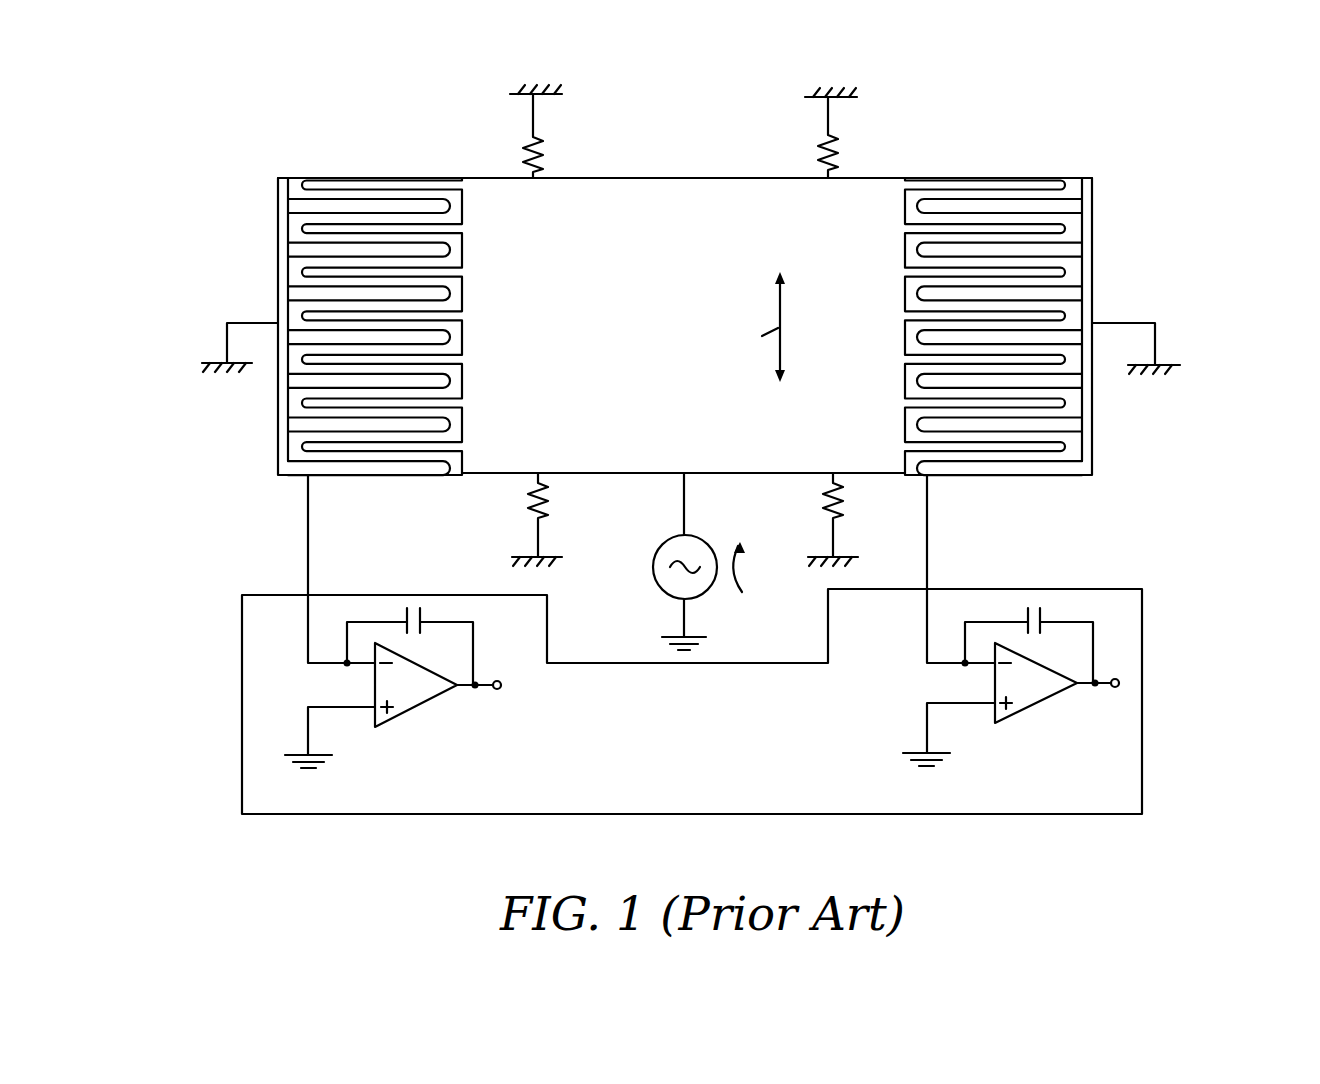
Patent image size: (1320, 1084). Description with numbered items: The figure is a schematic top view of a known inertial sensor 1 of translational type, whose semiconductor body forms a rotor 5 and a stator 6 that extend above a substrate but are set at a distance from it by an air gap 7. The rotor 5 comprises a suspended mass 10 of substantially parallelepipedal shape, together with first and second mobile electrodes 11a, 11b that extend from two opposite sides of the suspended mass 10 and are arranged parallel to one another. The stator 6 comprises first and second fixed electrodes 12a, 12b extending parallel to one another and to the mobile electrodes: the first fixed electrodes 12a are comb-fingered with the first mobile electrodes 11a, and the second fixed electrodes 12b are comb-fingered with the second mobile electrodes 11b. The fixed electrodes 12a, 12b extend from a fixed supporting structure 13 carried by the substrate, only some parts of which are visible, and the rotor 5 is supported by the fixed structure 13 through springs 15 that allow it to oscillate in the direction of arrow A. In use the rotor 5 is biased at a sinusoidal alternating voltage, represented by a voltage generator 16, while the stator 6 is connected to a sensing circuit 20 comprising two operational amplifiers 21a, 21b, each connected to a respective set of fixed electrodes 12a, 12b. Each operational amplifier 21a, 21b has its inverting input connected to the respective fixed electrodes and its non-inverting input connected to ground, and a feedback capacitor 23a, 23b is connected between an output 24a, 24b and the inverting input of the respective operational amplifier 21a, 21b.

The inertial sensor 1 is at (1142, 214).
The rotor 5 is at (632, 226).
The stator 6 is at (312, 297).
The air gap 7 is at (998, 288).
The suspended mass 10 is at (565, 407).
The first mobile electrodes 11a is at (1002, 270).
The second mobile electrodes 11b is at (418, 268).
The first fixed electrodes 12a is at (943, 295).
The second fixed electrodes 12b is at (362, 290).
The fixed supporting structure 13 is at (541, 97).
The springs 15 is at (545, 152).
The voltage generator 16 is at (663, 548).
The sensing circuit 20 is at (741, 644).
The operational amplifier 21a is at (1042, 715).
The operational amplifier 21b is at (445, 712).
The feedback capacitor 23a is at (1030, 606).
The feedback capacitor 23b is at (413, 608).
The output 24a is at (1106, 680).
The output 24b is at (492, 689).